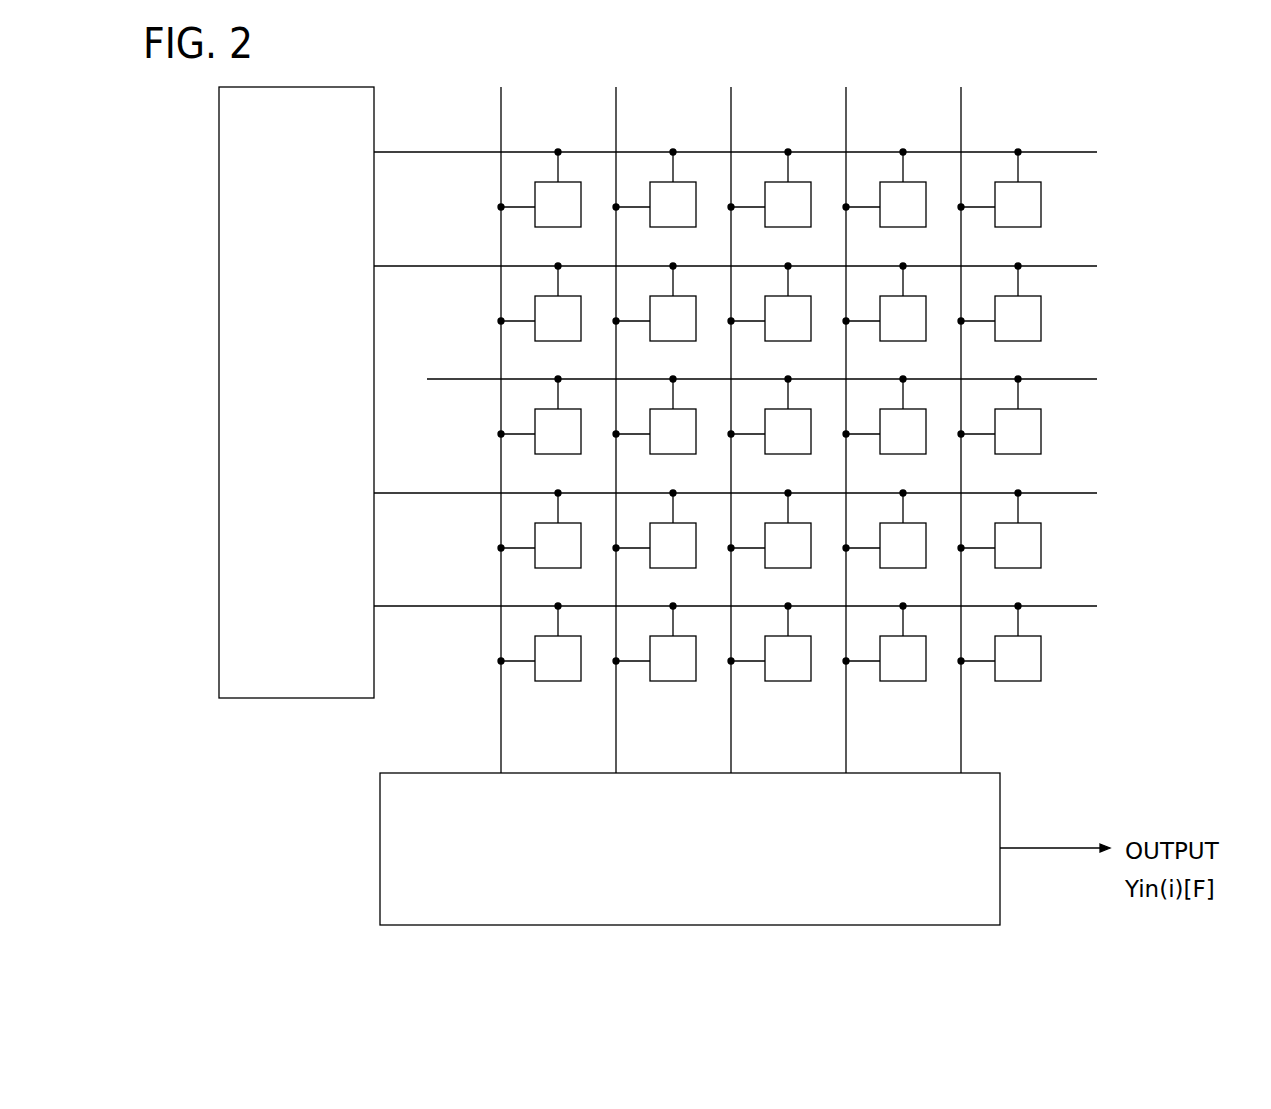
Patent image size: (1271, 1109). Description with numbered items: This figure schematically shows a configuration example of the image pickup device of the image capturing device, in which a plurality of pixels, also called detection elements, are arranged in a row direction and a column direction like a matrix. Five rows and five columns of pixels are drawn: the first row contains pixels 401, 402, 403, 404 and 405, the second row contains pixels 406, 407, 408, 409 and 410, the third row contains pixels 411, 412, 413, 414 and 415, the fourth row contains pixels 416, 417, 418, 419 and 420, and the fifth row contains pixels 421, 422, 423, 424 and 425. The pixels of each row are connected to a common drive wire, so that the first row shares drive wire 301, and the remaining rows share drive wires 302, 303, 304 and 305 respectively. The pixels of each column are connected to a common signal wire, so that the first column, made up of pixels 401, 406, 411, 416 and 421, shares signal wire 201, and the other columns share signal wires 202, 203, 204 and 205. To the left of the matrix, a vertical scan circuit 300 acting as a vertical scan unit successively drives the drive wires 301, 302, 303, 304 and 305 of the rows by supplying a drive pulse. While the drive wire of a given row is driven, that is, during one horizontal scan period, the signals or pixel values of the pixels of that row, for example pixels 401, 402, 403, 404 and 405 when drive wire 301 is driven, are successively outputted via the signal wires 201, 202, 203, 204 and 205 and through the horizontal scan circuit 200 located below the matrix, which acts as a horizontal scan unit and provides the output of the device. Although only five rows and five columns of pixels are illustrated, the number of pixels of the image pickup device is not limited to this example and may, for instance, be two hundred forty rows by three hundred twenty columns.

The horizontal scan circuit 200 is at (380, 838).
The vertical scan circuit 300 is at (303, 700).
The signal wire 201 is at (501, 100).
The signal wire 202 is at (616, 100).
The signal wire 203 is at (731, 100).
The signal wire 204 is at (846, 100).
The signal wire 205 is at (961, 100).
The drive wire 301 is at (1063, 152).
The drive wire 302 is at (1070, 266).
The drive wire 303 is at (1078, 379).
The drive wire 304 is at (1080, 493).
The drive wire 305 is at (1080, 606).
The pixel 401 is at (591, 235).
The pixel 402 is at (706, 235).
The pixel 403 is at (821, 235).
The pixel 404 is at (936, 235).
The pixel 405 is at (1051, 235).
The pixel 406 is at (591, 349).
The pixel 407 is at (706, 349).
The pixel 408 is at (821, 349).
The pixel 409 is at (936, 349).
The pixel 410 is at (1051, 349).
The pixel 411 is at (591, 462).
The pixel 412 is at (706, 462).
The pixel 413 is at (821, 462).
The pixel 414 is at (936, 462).
The pixel 415 is at (1051, 462).
The pixel 416 is at (591, 576).
The pixel 417 is at (706, 576).
The pixel 418 is at (821, 576).
The pixel 419 is at (936, 576).
The pixel 420 is at (1051, 576).
The pixel 421 is at (591, 689).
The pixel 422 is at (706, 689).
The pixel 423 is at (821, 689).
The pixel 424 is at (936, 689).
The pixel 425 is at (1051, 689).